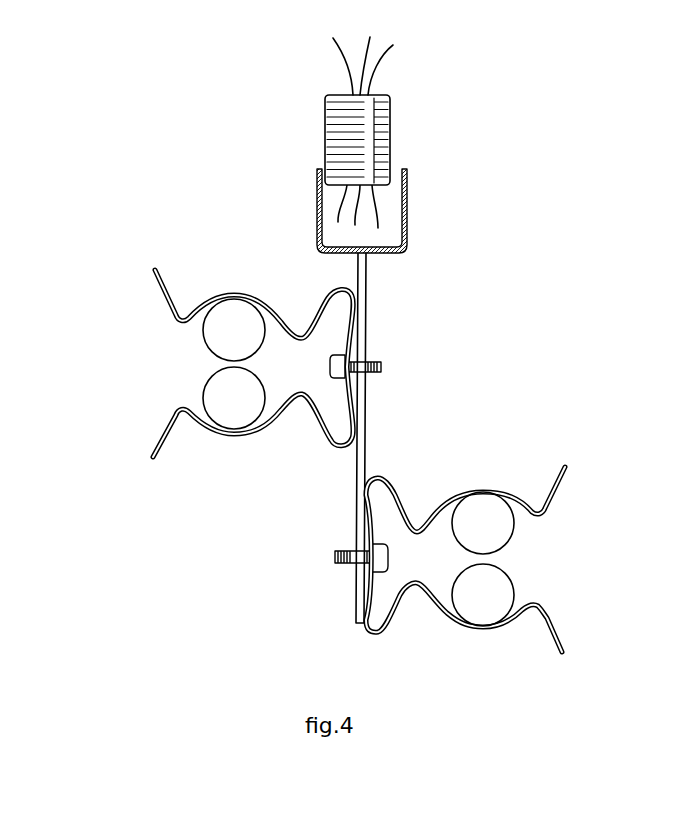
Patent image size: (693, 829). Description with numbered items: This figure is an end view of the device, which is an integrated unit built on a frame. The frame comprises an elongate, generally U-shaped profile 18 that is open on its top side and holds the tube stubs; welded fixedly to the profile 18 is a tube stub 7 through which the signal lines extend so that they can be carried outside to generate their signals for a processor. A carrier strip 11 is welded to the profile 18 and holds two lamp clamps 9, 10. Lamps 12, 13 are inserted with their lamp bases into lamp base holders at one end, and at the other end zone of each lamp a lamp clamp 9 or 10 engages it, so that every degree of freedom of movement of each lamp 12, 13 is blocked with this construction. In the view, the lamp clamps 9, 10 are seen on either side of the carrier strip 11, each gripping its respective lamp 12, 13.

The tube stub 7 is at (345, 130).
The U-shaped profile 18 is at (318, 204).
The lamp clamp 10 is at (162, 280).
The lamp 13 is at (219, 395).
The carrier strip 11 is at (358, 455).
The lamp clamp 9 is at (557, 490).
The lamp 12 is at (494, 593).